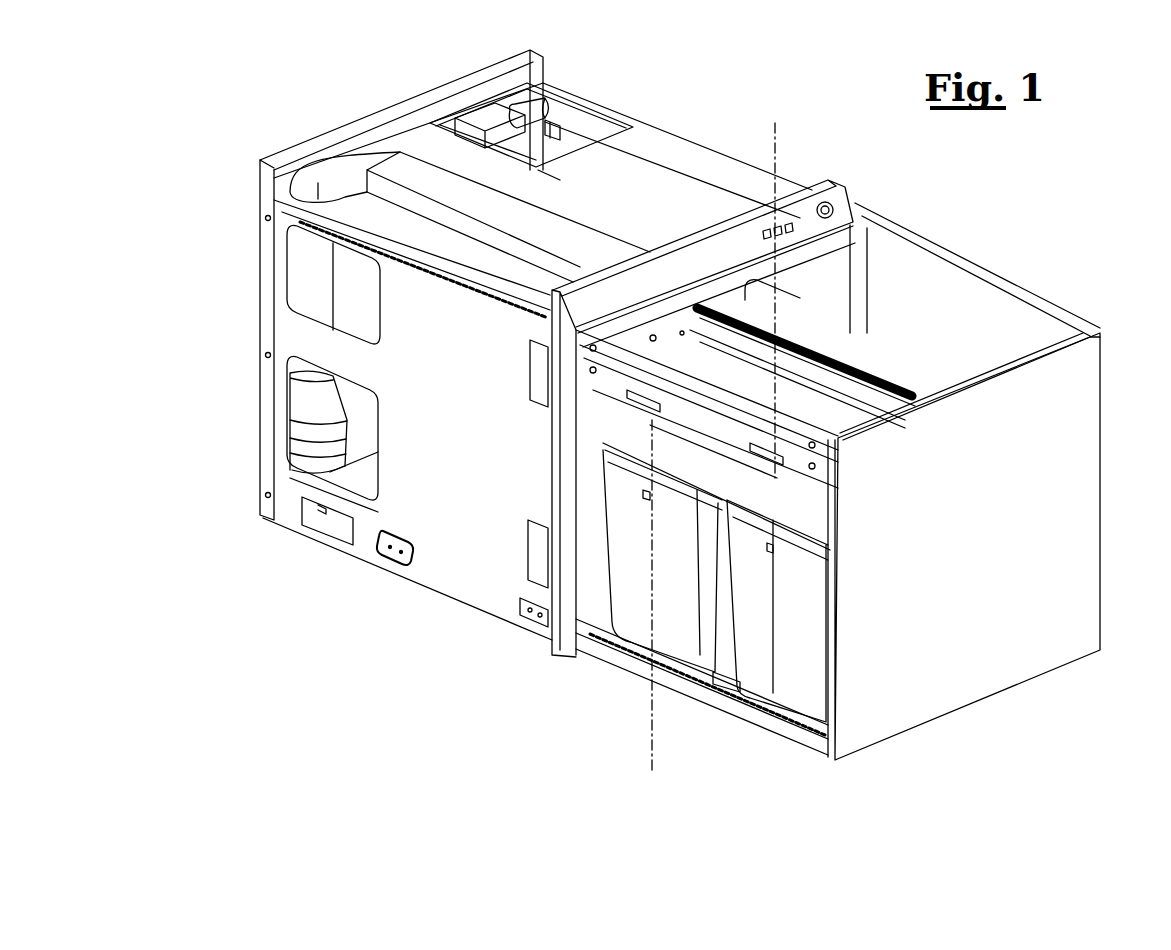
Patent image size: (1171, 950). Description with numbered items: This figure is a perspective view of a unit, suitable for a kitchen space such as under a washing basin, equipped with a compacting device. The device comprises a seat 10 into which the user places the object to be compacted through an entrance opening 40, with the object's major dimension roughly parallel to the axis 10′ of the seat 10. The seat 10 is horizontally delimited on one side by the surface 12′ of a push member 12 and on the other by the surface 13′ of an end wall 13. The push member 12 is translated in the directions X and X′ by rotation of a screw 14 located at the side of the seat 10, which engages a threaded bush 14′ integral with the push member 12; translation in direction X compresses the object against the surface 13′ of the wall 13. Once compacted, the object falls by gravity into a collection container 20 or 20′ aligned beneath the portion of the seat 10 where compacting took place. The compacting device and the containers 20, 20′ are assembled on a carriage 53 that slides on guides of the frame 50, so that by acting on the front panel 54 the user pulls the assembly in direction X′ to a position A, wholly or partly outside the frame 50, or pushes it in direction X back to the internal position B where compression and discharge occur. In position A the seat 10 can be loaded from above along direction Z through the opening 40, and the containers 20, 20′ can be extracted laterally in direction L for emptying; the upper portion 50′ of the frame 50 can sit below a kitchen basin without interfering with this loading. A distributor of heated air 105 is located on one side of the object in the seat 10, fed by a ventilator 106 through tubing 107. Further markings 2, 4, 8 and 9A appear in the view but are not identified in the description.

The section line II-II 2 is at (779, 148).
The deck / platform 4 is at (633, 233).
The collecting module 8 is at (898, 510).
The viewing direction 9A is at (788, 68).
The seat 10 is at (785, 385).
The axis 10′ is at (832, 407).
The push member 12 is at (890, 413).
The surface of push member 12′ is at (933, 407).
The end wall 13 is at (660, 300).
The surface of end wall 13′ is at (673, 318).
The screw 14 is at (875, 373).
The threaded bush 14′ is at (918, 400).
The collection container 20 is at (637, 630).
The collection container 20′ is at (760, 683).
The entrance opening 40 is at (713, 360).
The frame 50 is at (458, 582).
The upper portion of frame 50′ is at (680, 163).
The carriage 53 is at (738, 710).
The front panel 54 is at (1087, 393).
The distributor of heated air 105 is at (443, 184).
The ventilator 106 is at (295, 427).
The tubing 107 is at (302, 270).
The position A is at (565, 745).
The position B is at (368, 587).
The direction L is at (630, 760).
The direction Z is at (872, 105).
The direction X x is at (957, 262).
The direction X' x′ is at (1010, 288).